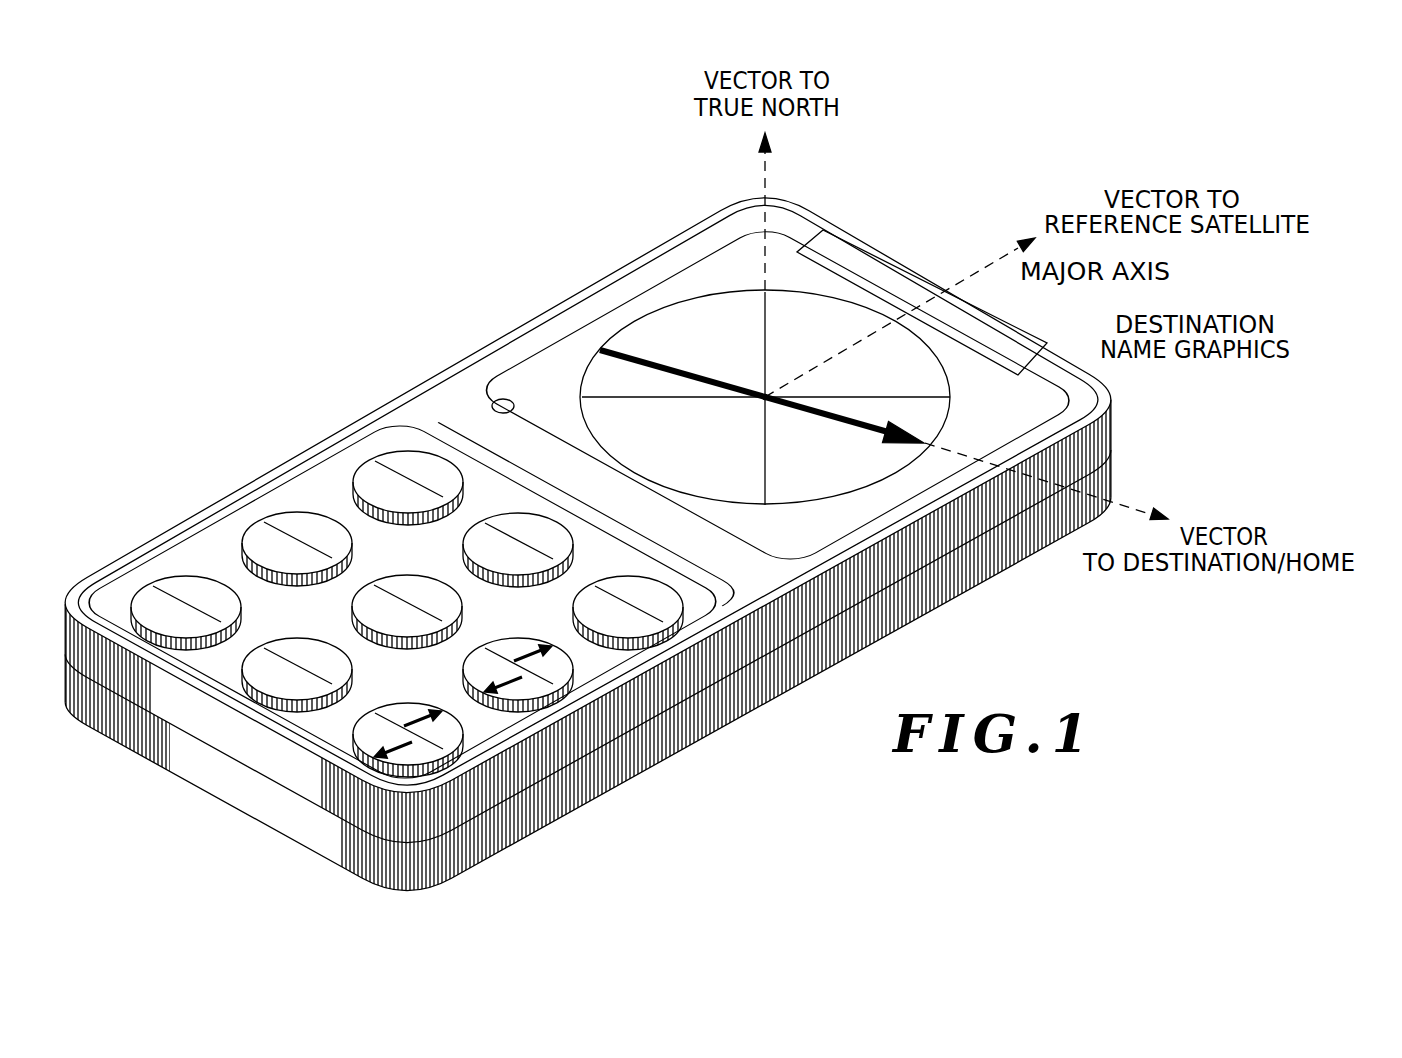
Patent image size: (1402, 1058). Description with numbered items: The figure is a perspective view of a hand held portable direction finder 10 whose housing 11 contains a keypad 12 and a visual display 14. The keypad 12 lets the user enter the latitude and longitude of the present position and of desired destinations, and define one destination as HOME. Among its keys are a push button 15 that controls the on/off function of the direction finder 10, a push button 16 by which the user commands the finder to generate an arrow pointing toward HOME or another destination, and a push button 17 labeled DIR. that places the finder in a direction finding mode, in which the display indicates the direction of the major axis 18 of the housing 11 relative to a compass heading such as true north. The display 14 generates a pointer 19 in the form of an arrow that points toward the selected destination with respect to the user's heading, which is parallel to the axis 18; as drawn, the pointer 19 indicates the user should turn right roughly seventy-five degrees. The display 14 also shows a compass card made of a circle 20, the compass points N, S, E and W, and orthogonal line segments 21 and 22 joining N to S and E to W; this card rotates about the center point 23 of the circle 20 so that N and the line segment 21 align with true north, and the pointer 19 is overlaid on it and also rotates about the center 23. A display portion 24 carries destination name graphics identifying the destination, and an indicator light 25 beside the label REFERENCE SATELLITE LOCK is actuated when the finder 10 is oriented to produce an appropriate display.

The portable direction finder 10 is at (370, 386).
The housing 11 is at (708, 700).
The keypad 12 is at (318, 492).
The visual display 14 is at (718, 276).
The push button 15 is at (372, 470).
The push button 16 is at (508, 514).
The push button 17 is at (634, 580).
The major axis 18 is at (1012, 272).
The pointer 19 is at (842, 422).
The circle 20 is at (830, 297).
The line segment 21 is at (763, 345).
The line segment 22 is at (666, 398).
The center point 23 is at (756, 398).
The display portion 24 is at (976, 330).
The indicator light 25 is at (497, 399).